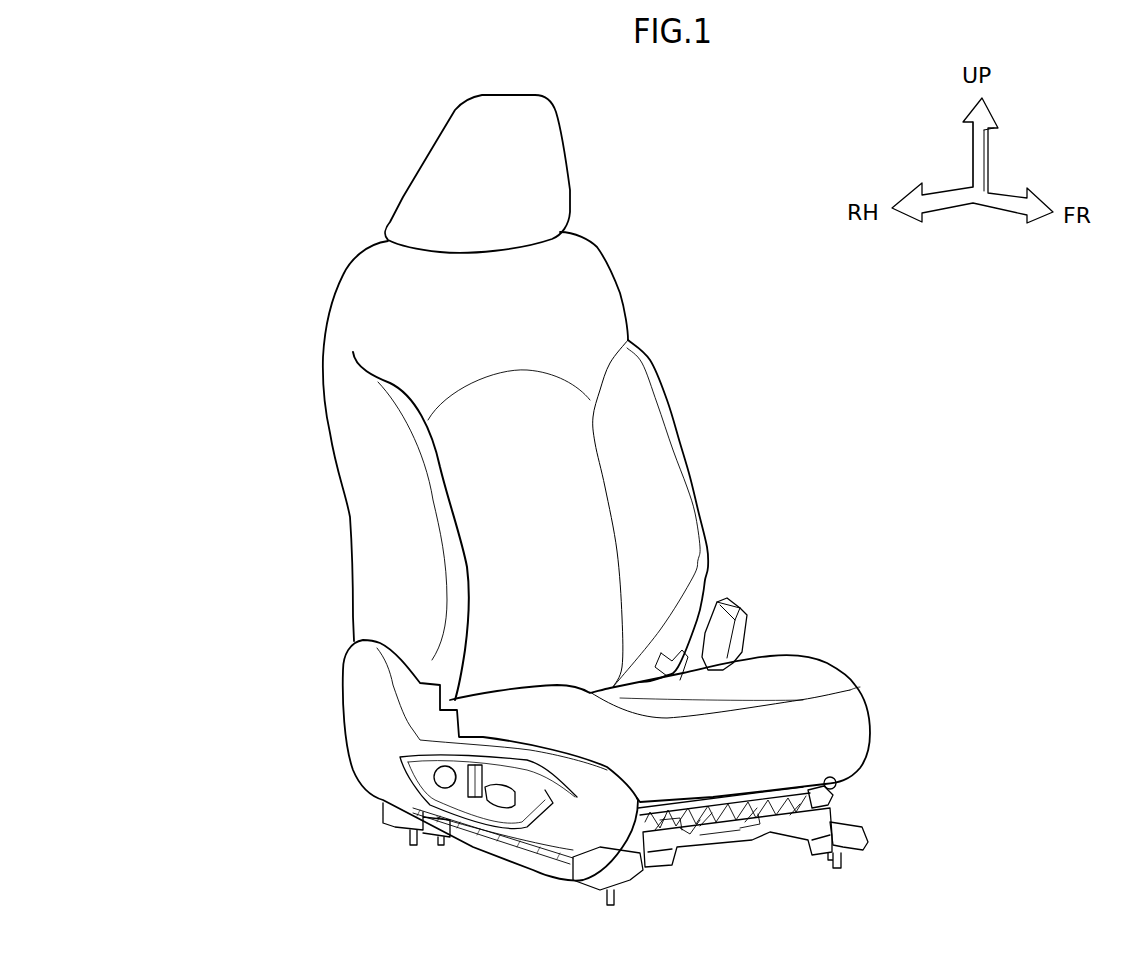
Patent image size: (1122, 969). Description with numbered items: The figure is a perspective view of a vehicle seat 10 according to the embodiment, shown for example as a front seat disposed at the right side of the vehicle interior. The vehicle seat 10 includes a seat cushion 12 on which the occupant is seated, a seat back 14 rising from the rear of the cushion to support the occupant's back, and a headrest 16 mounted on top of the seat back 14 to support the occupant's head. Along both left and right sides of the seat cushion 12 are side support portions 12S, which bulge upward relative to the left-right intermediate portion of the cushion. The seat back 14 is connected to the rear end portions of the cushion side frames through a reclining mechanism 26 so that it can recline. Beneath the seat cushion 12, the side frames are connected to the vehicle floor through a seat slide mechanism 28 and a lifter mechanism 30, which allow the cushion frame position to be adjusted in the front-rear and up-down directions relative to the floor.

The vehicle seat 10 is at (262, 152).
The seat cushion 12 is at (868, 690).
The side support portion 12S is at (557, 685).
The seat back 14 is at (683, 450).
The headrest 16 is at (481, 97).
The reclining mechanism 26 is at (340, 658).
The seat slide mechanism 28 is at (882, 832).
The lifter mechanism 30 is at (853, 795).